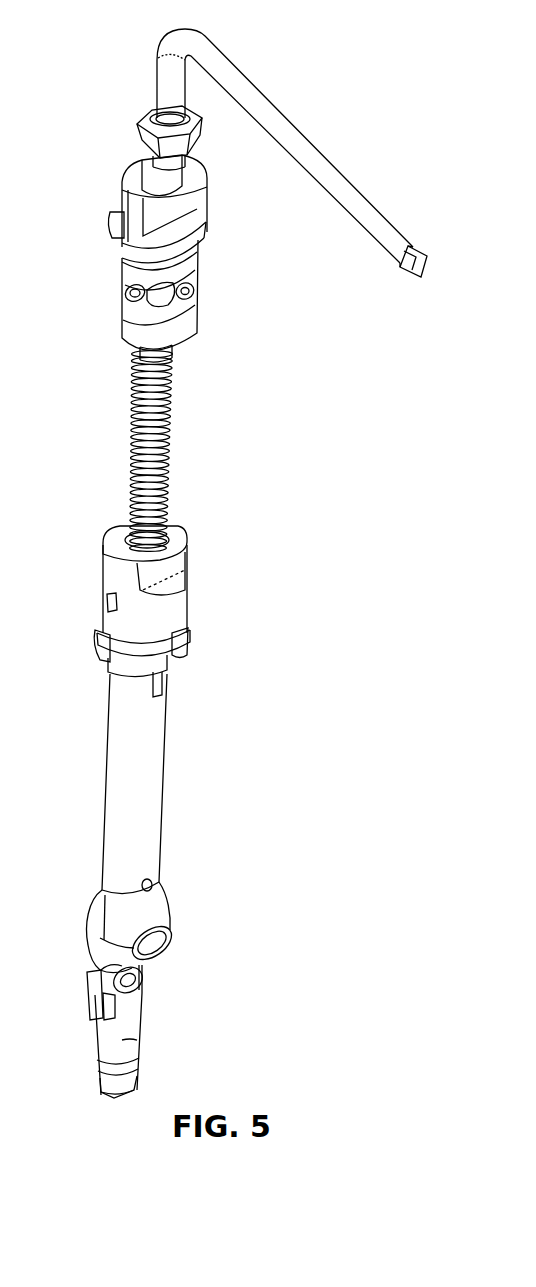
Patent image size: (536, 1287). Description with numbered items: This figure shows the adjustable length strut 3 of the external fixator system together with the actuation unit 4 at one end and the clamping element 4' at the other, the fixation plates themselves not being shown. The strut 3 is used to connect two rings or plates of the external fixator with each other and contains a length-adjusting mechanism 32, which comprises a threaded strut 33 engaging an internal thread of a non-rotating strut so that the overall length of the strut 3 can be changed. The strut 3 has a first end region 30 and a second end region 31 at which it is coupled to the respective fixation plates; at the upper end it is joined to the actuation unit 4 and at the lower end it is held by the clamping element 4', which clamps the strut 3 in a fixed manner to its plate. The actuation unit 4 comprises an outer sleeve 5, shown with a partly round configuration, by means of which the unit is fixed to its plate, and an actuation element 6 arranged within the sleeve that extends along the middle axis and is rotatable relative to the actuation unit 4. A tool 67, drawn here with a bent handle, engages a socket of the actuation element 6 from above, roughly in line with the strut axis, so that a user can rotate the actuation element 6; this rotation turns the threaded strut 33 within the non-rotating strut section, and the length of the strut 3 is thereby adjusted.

The tool 67 is at (318, 167).
The actuation unit 4 is at (188, 176).
The outer sleeve 5 is at (182, 243).
The actuation element 6 is at (135, 263).
The first end region 30 is at (172, 360).
The adjustable length strut 3 is at (172, 455).
The threaded strut 33 is at (172, 503).
The length-adjusting mechanism 32 is at (160, 533).
The second end region 31 is at (148, 903).
The clamping element 4' is at (155, 1030).